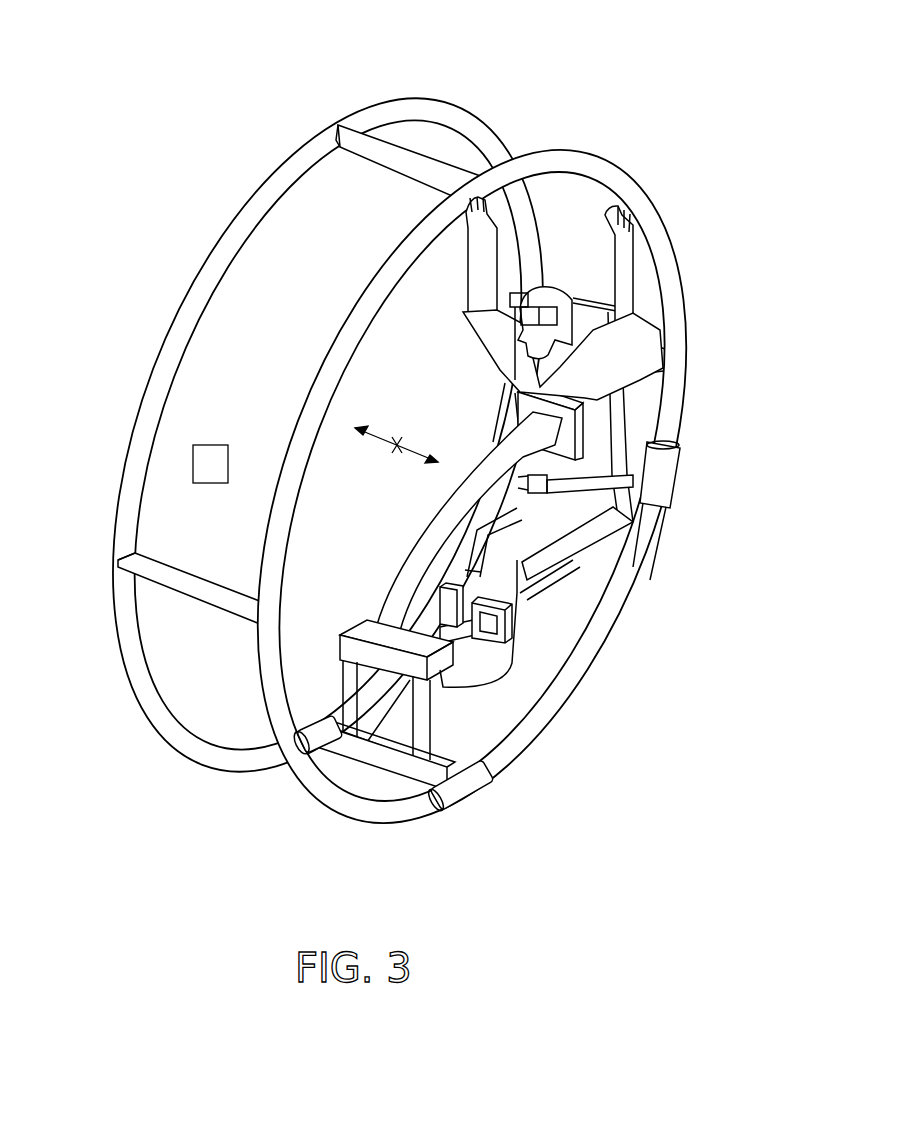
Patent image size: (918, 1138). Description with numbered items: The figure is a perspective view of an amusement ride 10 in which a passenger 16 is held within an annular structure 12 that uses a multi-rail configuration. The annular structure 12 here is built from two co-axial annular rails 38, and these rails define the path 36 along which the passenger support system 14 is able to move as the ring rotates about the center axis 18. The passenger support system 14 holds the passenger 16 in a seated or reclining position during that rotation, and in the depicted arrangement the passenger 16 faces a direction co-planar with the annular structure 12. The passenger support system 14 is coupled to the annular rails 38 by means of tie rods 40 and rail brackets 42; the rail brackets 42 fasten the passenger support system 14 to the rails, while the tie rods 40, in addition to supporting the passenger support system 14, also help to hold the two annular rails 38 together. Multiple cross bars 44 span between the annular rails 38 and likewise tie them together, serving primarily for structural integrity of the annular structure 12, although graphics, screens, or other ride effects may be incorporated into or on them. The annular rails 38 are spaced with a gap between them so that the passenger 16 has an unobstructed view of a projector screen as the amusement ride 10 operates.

The amusement ride 10 is at (130, 46).
The annular structure 12 is at (256, 171).
The passenger support system 14 is at (375, 585).
The passenger 16 is at (497, 352).
The center axis 18 is at (367, 440).
The path 36 is at (224, 479).
The annular rails 38 is at (360, 313).
The tie rods 40 is at (377, 763).
The rail brackets 42 is at (663, 470).
The cross bars 44 is at (393, 170).